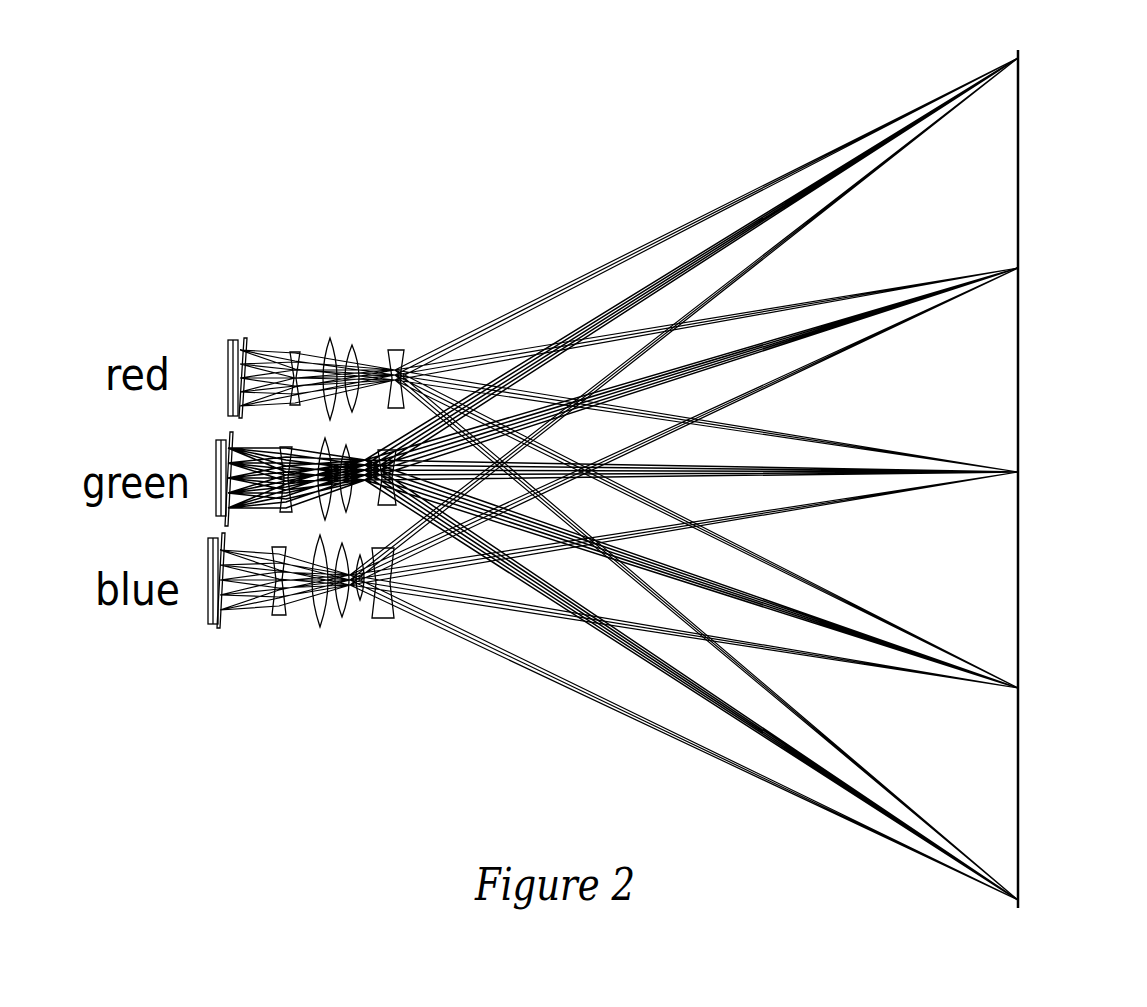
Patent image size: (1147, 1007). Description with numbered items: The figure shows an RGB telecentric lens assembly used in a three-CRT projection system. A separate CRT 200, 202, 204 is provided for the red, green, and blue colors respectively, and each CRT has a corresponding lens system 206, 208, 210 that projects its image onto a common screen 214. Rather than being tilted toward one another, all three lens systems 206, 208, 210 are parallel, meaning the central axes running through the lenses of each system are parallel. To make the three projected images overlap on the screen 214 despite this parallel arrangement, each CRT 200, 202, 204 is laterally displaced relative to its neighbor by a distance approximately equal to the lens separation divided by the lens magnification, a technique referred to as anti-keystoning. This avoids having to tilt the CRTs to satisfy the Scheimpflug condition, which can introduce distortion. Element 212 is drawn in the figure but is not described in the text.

The CRT 200 is at (228, 345).
The CRT 202 is at (214, 458).
The CRT 204 is at (206, 572).
The lens system 206 is at (243, 343).
The lens system 208 is at (233, 440).
The lens system 210 is at (223, 612).
The blue channel lens element 212 is at (384, 618).
The screen 214 is at (1027, 478).